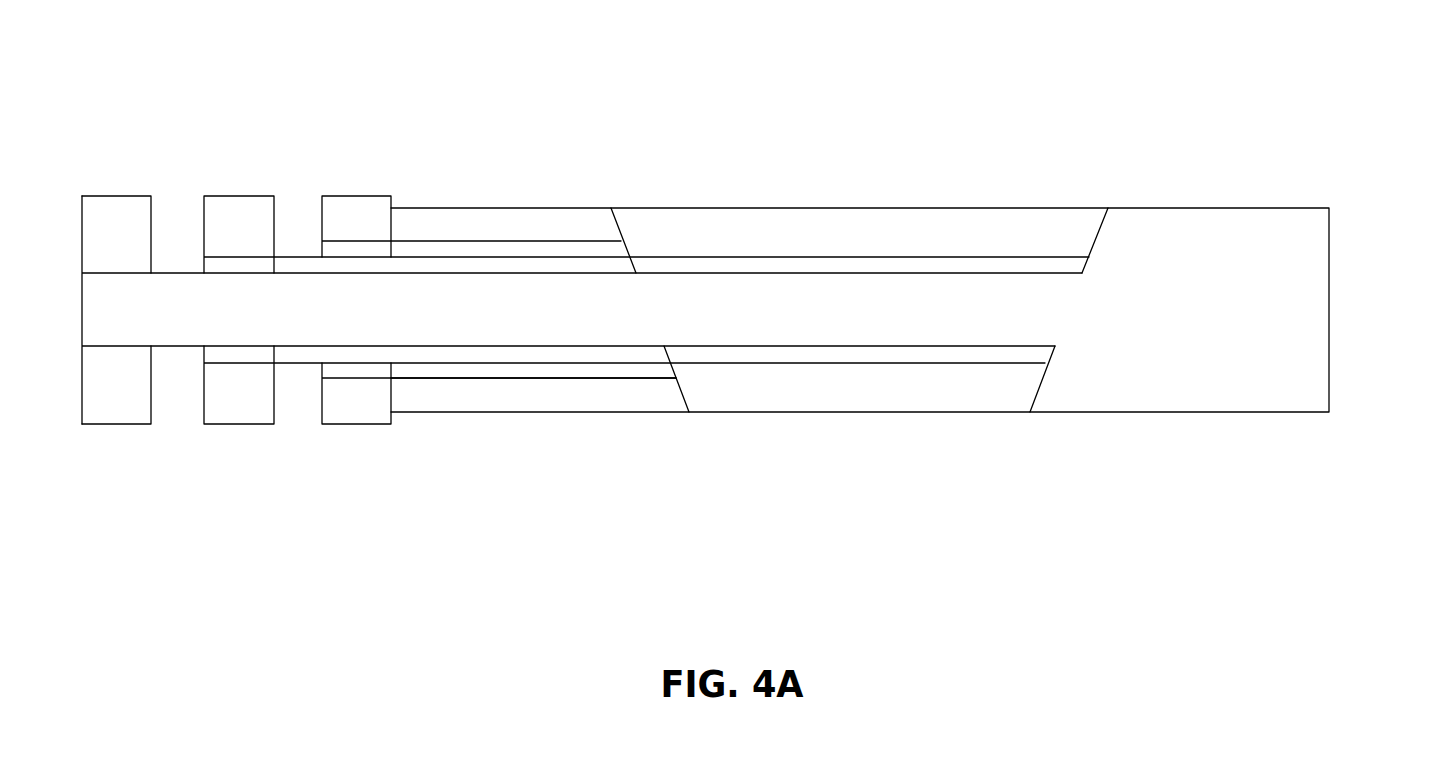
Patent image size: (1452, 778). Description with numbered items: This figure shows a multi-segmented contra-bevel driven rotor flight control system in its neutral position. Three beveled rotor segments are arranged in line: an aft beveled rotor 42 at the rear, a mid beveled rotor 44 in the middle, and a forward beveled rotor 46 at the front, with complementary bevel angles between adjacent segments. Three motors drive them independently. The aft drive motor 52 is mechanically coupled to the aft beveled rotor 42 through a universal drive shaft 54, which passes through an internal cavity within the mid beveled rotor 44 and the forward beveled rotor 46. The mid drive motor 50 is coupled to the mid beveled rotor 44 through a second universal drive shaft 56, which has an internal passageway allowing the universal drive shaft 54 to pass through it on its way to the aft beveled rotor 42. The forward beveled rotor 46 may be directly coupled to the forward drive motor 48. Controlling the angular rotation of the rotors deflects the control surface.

The aft beveled rotor 42 is at (1224, 208).
The mid beveled rotor 44 is at (765, 208).
The forward beveled rotor 46 is at (473, 208).
The forward drive motor 48 is at (377, 425).
The mid drive motor 50 is at (245, 196).
The aft drive motor 52 is at (115, 425).
The universal drive shaft 54 is at (582, 310).
The second universal drive shaft 56 is at (607, 379).